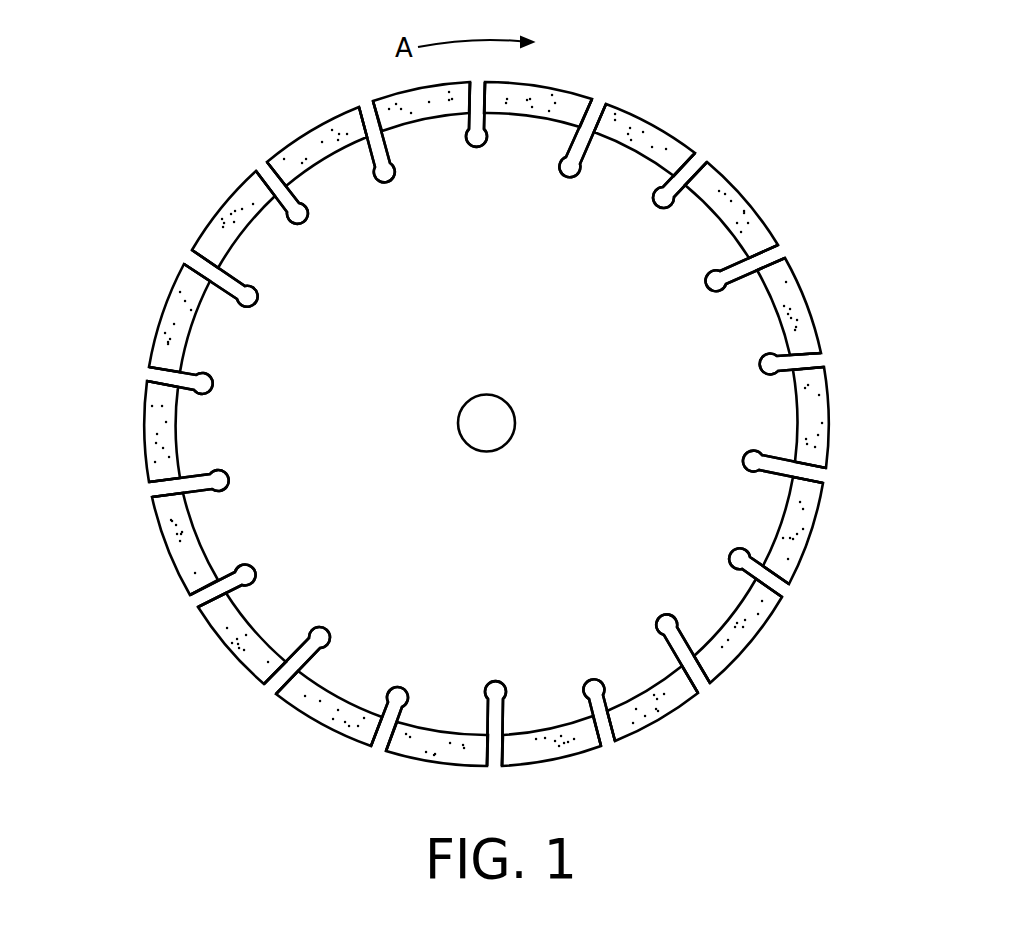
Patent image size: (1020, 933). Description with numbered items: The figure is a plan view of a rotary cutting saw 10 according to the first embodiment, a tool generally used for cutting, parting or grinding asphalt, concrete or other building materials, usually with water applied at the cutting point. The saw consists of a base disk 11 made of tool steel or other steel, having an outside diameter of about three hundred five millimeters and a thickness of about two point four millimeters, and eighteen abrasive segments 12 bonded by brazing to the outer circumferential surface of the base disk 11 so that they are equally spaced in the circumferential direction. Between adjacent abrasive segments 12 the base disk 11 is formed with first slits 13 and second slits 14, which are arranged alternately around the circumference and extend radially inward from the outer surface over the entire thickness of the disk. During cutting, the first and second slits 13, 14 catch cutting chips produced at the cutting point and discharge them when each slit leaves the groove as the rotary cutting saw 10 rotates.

The rotary cutting saw 10 is at (487, 421).
The base disk 11 is at (717, 333).
The abrasive segments 12 is at (658, 137).
The first slits 13 is at (588, 120).
The second slits 14 is at (690, 172).